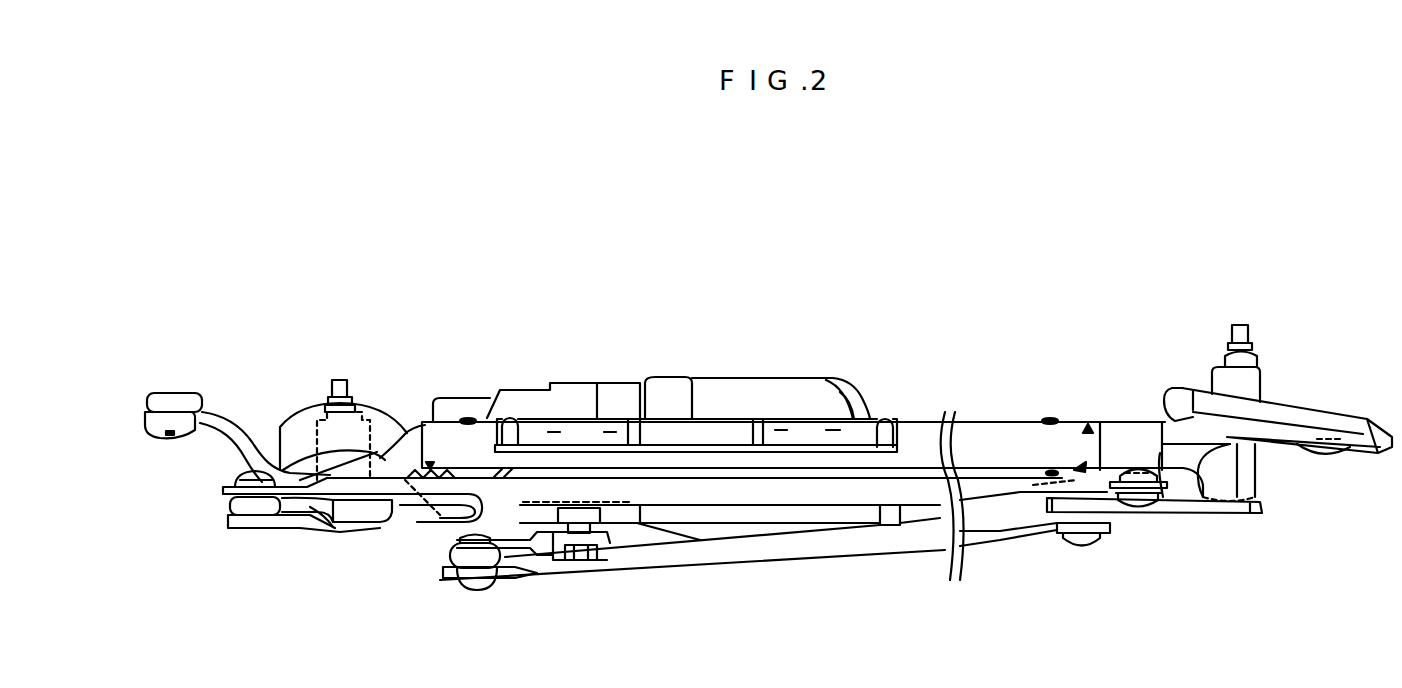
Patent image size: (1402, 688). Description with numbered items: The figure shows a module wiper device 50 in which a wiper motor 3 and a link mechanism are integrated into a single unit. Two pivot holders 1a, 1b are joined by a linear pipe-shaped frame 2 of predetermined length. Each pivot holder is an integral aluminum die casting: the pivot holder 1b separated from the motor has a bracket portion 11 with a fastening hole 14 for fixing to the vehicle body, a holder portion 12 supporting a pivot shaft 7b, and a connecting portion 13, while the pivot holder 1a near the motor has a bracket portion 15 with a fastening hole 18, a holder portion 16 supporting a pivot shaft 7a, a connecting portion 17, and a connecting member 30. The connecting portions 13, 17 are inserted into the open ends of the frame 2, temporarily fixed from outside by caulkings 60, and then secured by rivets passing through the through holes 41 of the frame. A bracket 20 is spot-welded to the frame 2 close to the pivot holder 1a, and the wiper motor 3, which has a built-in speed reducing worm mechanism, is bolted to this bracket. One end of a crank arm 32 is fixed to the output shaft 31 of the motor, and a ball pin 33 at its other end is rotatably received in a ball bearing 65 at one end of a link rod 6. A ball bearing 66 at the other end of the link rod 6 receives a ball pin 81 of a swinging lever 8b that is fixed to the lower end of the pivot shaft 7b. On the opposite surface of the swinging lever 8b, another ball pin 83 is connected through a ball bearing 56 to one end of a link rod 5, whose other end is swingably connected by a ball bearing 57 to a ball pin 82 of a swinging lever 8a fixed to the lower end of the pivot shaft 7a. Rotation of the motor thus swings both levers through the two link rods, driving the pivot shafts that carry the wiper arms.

The module wiper device 50 is at (823, 246).
The pipe-shaped frame 2 is at (976, 424).
The connecting portion 17 is at (412, 430).
The wiper motor 3 is at (801, 382).
The through hole 41 is at (470, 418).
The caulking 60 is at (434, 422).
The pivot holder 1a is at (298, 420).
The bracket portion 15 is at (379, 422).
The pivot shaft 7a is at (339, 379).
The fastening hole 18 is at (185, 398).
The ball bearing 57 is at (233, 484).
The ball pin 82 is at (232, 510).
The swinging lever 8a is at (250, 530).
The holder portion 16 is at (343, 512).
The connecting member 30 is at (392, 516).
The link rod 5 is at (805, 508).
The bracket 20 is at (707, 526).
The link rod 6 is at (845, 552).
The output shaft 31 is at (588, 530).
The crank arm 32 is at (558, 540).
The ball bearing 65 is at (478, 586).
The ball pin 33 is at (455, 570).
The connecting portion 13 is at (1133, 432).
The bracket portion 11 is at (1296, 410).
The fastening hole 14 is at (1335, 453).
The pivot holder 1b is at (1258, 380).
The pivot shaft 7b is at (1239, 326).
The holder portion 12 is at (1248, 480).
The swinging lever 8b is at (1238, 512).
The ball pin 83 is at (1150, 505).
The ball bearing 56 is at (1200, 502).
The ball pin 81 is at (1068, 525).
The ball bearing 66 is at (1090, 540).